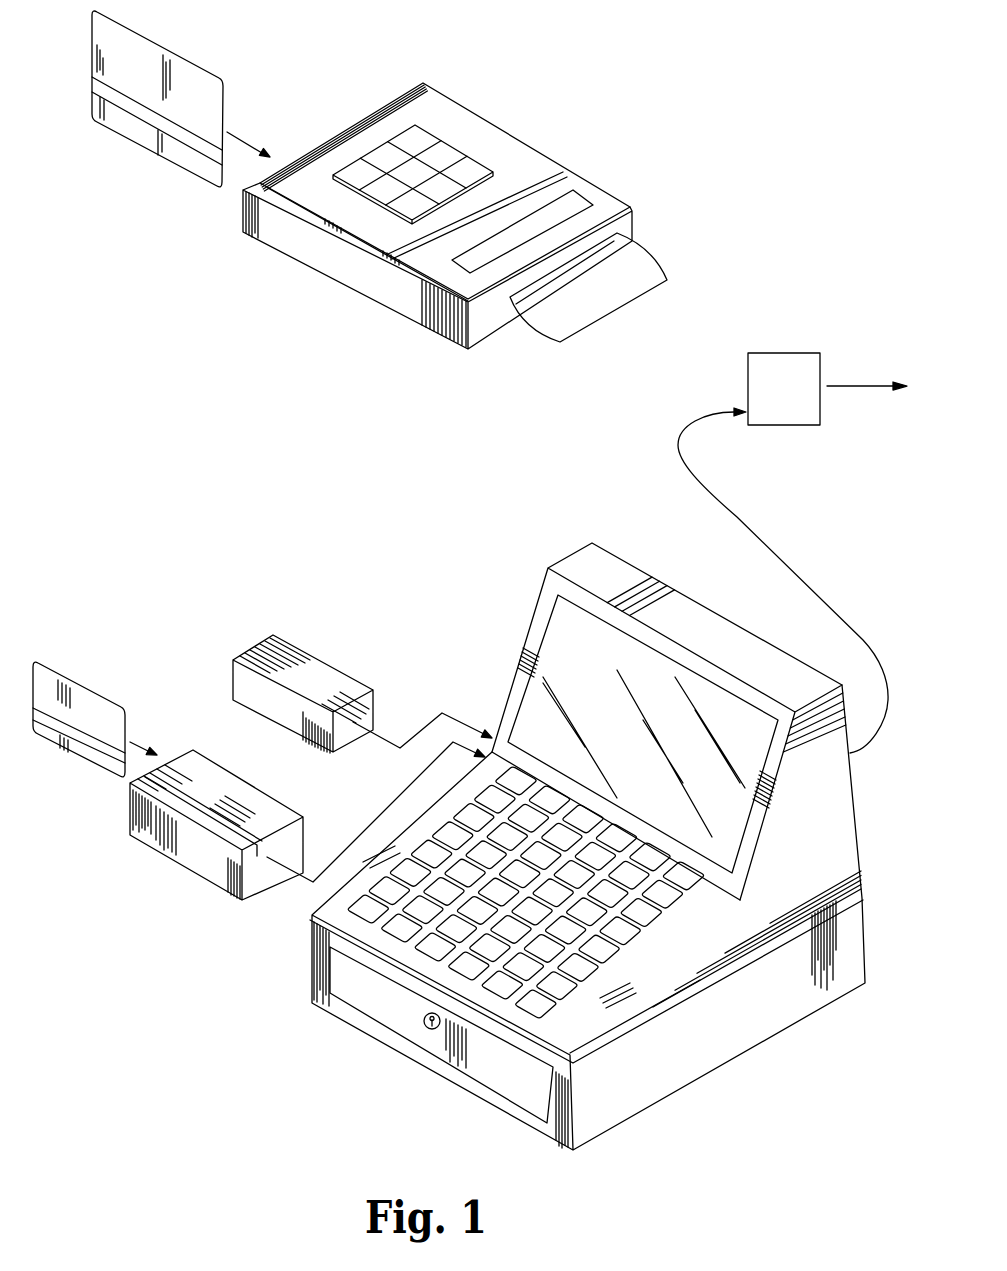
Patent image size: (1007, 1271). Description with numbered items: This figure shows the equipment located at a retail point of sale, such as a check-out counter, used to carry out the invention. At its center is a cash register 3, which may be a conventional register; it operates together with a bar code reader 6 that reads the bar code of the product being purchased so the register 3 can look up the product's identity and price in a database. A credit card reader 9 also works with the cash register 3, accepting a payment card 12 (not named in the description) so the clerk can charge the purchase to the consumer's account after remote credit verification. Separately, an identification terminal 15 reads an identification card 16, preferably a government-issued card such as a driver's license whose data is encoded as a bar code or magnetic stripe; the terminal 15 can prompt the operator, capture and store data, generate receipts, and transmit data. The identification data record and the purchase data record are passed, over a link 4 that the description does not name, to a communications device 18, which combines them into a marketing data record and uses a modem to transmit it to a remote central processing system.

The cash register 3 is at (672, 1003).
The communication cable 4 is at (737, 515).
The bar code reader 6 is at (328, 663).
The credit card reader 9 is at (193, 857).
The identification card 12 is at (110, 700).
The identification terminal 15 is at (318, 258).
The identification card 16 is at (148, 147).
The communications device 18 is at (810, 358).